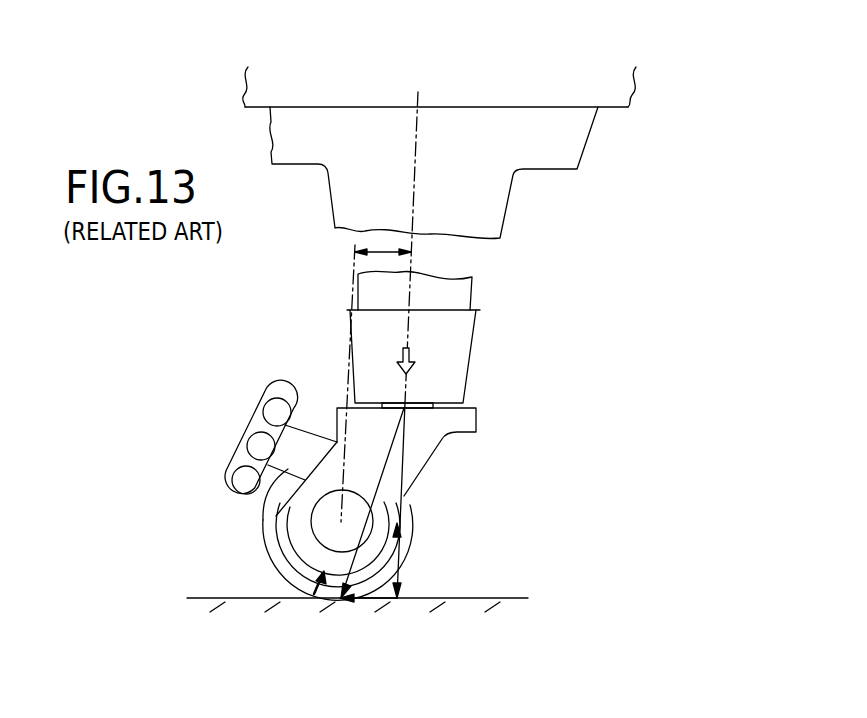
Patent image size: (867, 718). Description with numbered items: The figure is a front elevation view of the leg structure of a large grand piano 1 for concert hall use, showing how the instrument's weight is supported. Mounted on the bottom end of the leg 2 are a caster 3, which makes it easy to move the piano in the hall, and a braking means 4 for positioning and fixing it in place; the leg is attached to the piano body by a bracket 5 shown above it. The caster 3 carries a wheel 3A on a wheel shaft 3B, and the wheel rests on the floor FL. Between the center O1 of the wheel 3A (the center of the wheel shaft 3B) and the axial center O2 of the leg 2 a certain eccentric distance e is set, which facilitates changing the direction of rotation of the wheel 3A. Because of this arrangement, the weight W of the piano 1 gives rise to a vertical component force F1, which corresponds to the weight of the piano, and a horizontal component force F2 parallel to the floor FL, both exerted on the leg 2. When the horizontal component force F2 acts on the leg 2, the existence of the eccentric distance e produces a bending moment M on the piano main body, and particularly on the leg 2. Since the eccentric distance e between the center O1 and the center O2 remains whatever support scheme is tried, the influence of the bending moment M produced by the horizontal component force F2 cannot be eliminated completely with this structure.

The grand piano 1 is at (540, 96).
The leg 2 is at (460, 337).
The caster 3 is at (458, 422).
The wheel 3A is at (413, 528).
The wheel shaft 3B is at (262, 521).
The braking means 4 is at (300, 460).
The body bracket 5 is at (548, 138).
The center of the wheel O1 is at (341, 523).
The axial center of the leg O2 is at (408, 376).
The weight W is at (403, 349).
The vertical component force F1 is at (407, 452).
The horizontal component force F2 is at (362, 603).
The bending moment M is at (317, 606).
The eccentric distance e is at (376, 375).
The floor FL is at (528, 598).